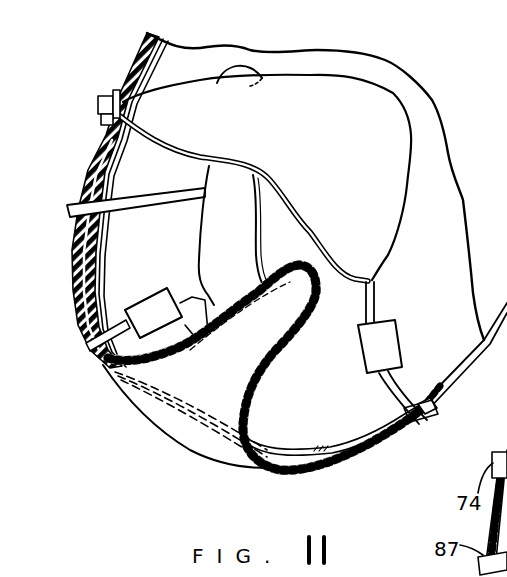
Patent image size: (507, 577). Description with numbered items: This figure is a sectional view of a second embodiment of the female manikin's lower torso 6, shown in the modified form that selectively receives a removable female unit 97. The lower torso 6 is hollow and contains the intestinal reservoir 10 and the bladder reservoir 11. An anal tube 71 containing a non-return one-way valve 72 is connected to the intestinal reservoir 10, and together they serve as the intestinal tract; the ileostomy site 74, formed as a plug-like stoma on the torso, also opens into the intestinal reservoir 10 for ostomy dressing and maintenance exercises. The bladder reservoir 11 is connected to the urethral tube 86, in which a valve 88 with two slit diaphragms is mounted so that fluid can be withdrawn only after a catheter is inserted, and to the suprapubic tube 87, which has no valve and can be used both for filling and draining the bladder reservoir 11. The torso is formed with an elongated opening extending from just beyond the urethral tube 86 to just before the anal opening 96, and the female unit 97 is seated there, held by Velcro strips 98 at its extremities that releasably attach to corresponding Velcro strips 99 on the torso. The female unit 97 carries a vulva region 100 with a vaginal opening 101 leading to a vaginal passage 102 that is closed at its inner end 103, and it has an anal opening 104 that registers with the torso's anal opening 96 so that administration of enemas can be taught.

The lower torso 6 is at (461, 384).
The intestinal reservoir 10 is at (402, 207).
The bladder reservoir 11 is at (217, 233).
The tube 71 is at (378, 296).
The non-return one-way valve 72 is at (382, 339).
The ileostomy site 74 is at (108, 99).
The urethral tube 86 is at (88, 346).
The suprapubic tube 87 is at (70, 203).
The valve 88 is at (157, 300).
The anal opening 96 is at (420, 400).
The female unit 97 is at (95, 401).
The Velcro strips 98 is at (347, 443).
The Velcro strips 99 is at (432, 402).
The vulva region 100 is at (187, 450).
The vaginal opening 101 is at (177, 390).
The vaginal passage 102 is at (277, 363).
The inner end 103 is at (307, 268).
The anal opening 104 is at (425, 420).